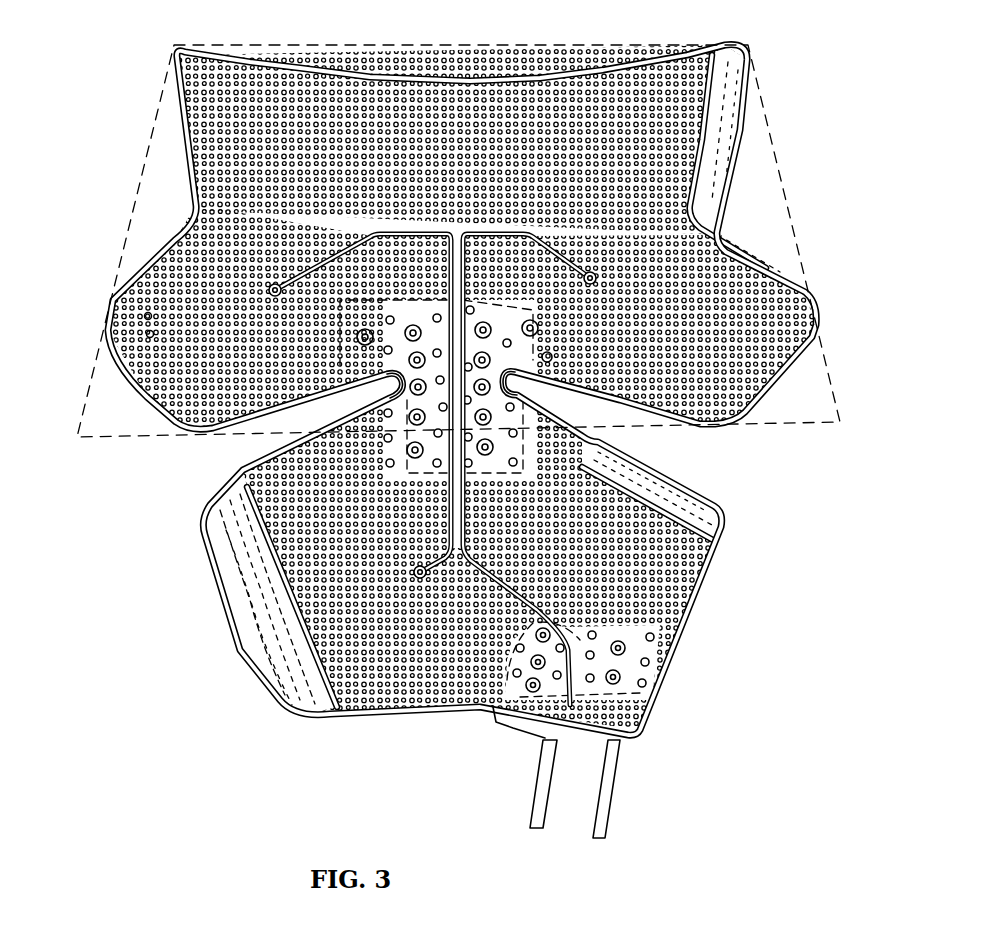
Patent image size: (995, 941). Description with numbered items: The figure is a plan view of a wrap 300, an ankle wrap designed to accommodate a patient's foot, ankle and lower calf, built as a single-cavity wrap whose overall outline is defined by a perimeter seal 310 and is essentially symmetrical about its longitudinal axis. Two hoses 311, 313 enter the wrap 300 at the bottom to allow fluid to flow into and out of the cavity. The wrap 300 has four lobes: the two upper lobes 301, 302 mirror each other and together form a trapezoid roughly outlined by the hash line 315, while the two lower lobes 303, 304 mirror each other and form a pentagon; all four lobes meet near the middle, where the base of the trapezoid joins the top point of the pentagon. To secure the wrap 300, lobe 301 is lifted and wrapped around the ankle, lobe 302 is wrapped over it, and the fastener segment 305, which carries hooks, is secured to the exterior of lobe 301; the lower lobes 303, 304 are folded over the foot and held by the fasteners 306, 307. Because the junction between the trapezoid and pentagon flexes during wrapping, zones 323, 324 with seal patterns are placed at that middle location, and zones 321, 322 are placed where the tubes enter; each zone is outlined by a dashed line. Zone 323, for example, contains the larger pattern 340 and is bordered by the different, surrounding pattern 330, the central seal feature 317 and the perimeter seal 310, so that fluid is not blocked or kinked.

The wrap 300 is at (280, 762).
The lobe 301 is at (194, 207).
The lobe 302 is at (724, 197).
The lobe 303 is at (708, 590).
The lobe 304 is at (232, 655).
The fastener segment 305 is at (722, 52).
The right lower wing 306 is at (697, 503).
The left lower wing 307 is at (210, 543).
The perimeter seal 310 is at (497, 78).
The hose 311 is at (607, 807).
The hose 313 is at (540, 802).
The hash line 315 is at (151, 130).
The central conductive trace 317 is at (452, 552).
The zone 321 is at (513, 688).
The zone 322 is at (654, 650).
The zone 323 is at (395, 405).
The zone 324 is at (520, 398).
The pattern 330 is at (255, 481).
The pattern 340 is at (414, 328).